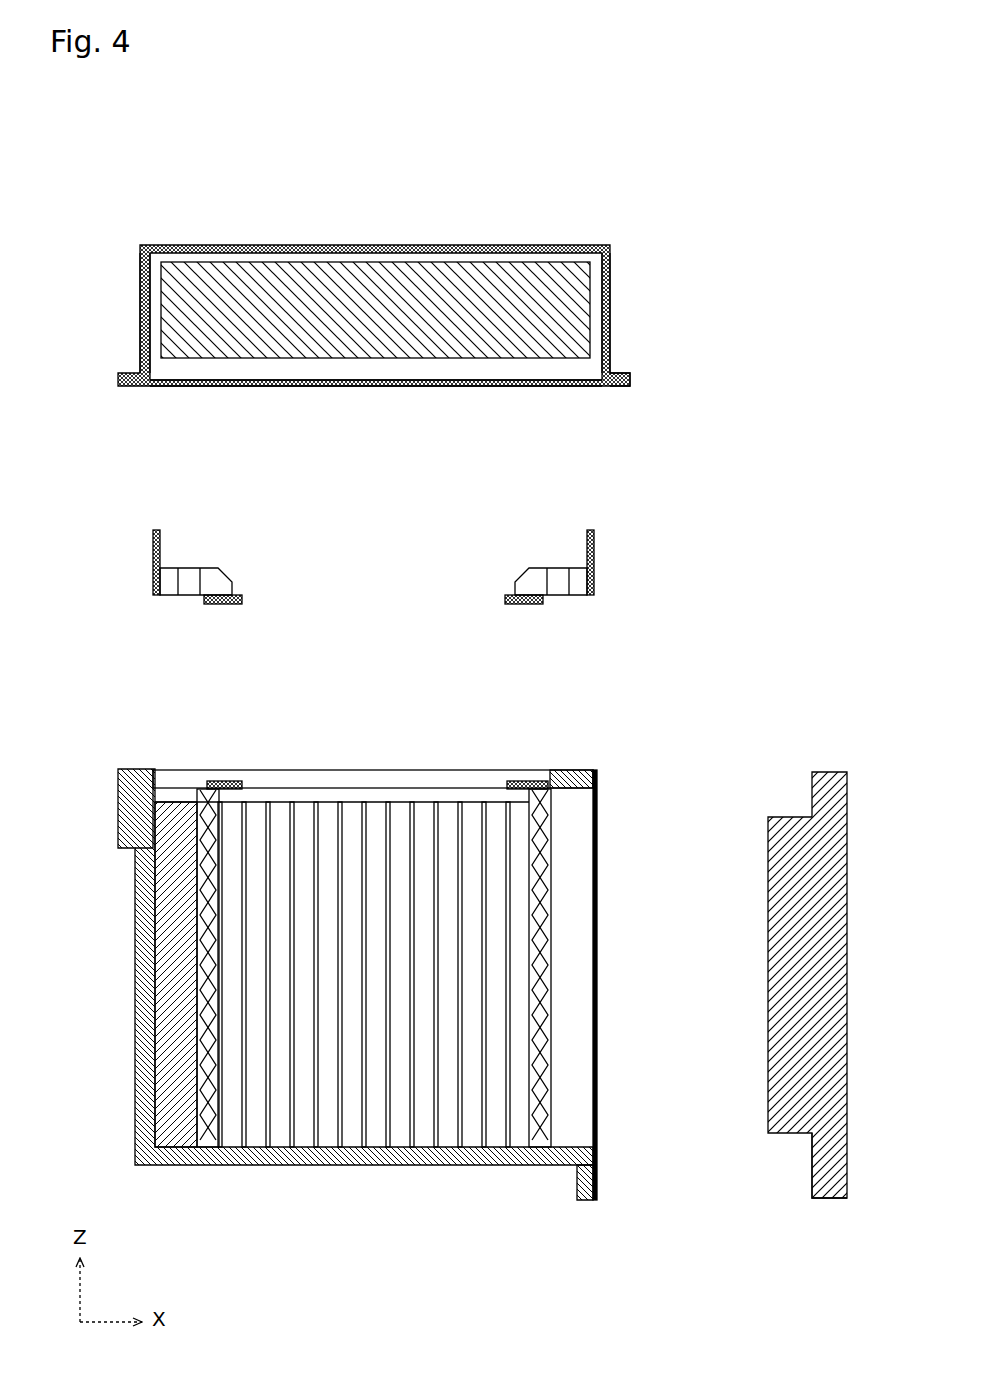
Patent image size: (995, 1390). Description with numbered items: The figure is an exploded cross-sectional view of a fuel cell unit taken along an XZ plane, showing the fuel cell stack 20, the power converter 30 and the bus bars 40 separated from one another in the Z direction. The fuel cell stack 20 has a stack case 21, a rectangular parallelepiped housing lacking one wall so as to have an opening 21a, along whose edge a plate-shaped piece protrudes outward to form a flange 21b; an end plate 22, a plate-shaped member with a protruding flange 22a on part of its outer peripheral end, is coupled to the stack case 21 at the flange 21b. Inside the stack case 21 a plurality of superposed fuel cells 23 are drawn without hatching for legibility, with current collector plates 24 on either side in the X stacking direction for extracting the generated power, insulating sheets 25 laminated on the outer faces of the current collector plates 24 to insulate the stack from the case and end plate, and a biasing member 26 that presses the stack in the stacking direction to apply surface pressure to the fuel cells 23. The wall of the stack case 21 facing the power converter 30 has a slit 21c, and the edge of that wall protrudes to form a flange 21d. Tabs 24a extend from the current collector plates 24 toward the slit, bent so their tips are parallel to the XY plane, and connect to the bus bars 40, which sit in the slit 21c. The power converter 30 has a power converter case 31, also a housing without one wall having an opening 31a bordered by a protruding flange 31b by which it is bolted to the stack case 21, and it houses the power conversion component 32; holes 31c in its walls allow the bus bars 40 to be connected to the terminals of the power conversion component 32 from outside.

The fuel cell stack 20 is at (128, 745).
The stack case 21 is at (130, 975).
The opening 21a is at (612, 862).
The flange 21b is at (578, 1195).
The slit 21c is at (368, 783).
The flange 21d is at (128, 802).
The end plate 22 is at (757, 748).
The flange 22a is at (818, 1170).
The fuel cells 23 is at (305, 1135).
The current collector plates 24 is at (222, 1167).
The tabs 24a is at (214, 789).
The insulating sheets 25 is at (200, 1167).
The biasing member 26 is at (180, 1165).
The power converter 30 is at (135, 210).
The power converter case 31 is at (143, 258).
The opening 31a is at (384, 400).
The flange 31b is at (626, 388).
The holes 31c is at (136, 330).
The power conversion component 32 is at (288, 325).
The bus bars 40 is at (142, 556).